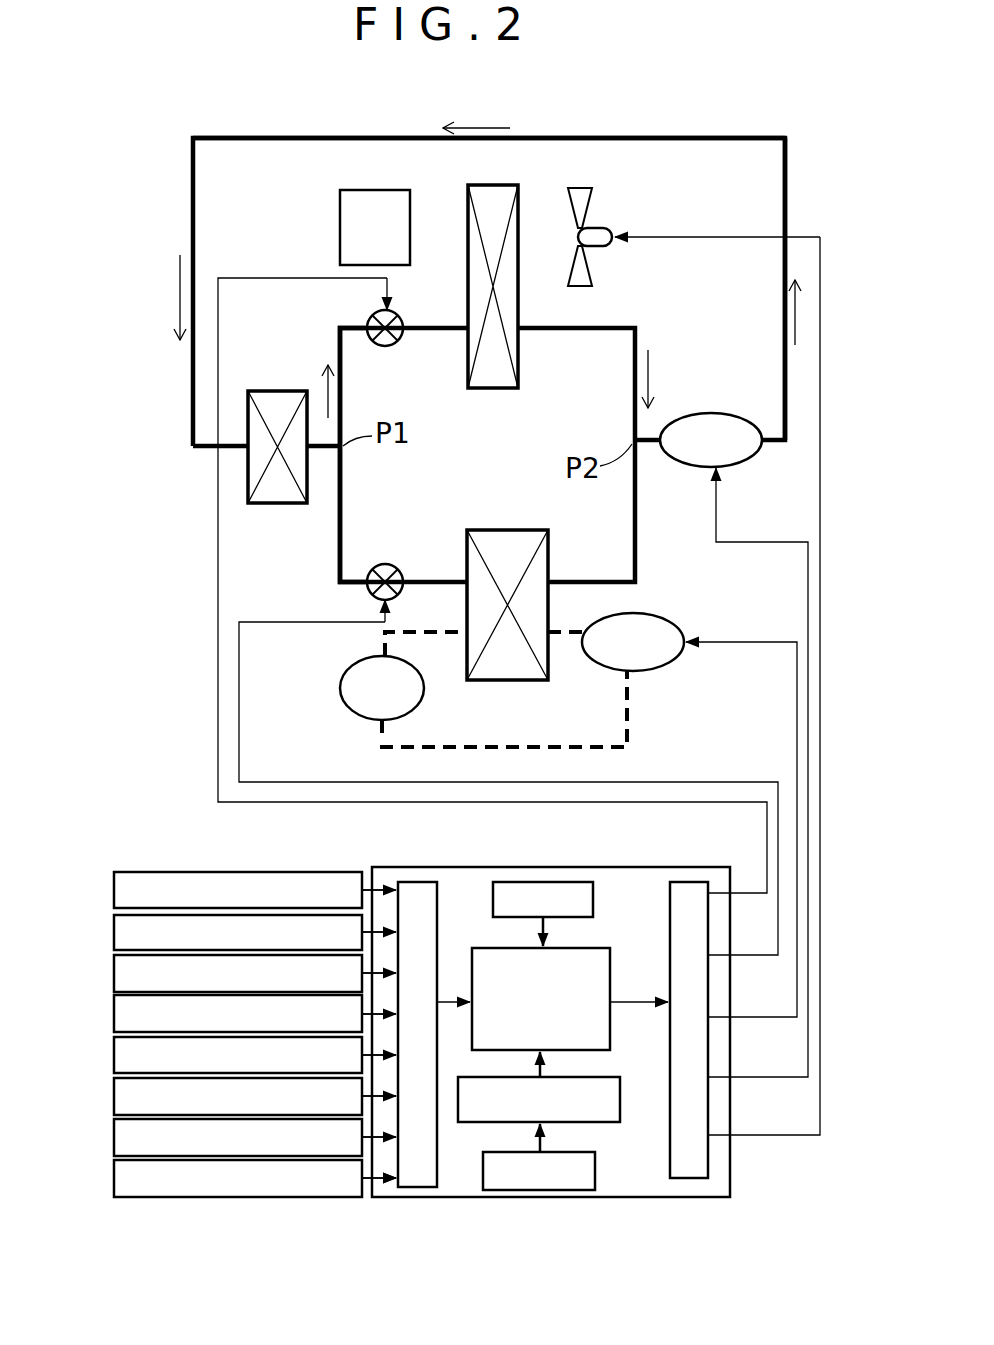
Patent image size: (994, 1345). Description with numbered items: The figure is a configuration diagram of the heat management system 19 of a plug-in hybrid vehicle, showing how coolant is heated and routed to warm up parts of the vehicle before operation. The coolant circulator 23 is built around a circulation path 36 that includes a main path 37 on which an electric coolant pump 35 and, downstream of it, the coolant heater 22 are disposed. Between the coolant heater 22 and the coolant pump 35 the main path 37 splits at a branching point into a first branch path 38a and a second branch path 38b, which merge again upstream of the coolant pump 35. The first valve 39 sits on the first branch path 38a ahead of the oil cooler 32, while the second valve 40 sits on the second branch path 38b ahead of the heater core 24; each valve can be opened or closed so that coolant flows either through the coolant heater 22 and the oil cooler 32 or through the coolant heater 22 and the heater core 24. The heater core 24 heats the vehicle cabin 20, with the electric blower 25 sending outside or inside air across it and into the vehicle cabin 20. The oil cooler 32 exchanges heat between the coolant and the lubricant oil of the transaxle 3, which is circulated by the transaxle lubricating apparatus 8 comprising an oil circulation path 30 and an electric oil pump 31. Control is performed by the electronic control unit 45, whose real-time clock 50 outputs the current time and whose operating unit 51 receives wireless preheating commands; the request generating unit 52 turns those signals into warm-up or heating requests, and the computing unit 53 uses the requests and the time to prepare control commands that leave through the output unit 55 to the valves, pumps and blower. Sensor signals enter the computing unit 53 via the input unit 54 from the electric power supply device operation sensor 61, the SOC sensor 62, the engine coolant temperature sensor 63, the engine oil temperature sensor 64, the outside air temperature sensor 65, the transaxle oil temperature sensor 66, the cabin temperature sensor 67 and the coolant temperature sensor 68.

The heat management system 19 is at (219, 110).
The vehicle cabin 20 is at (339, 228).
The coolant heater 22 is at (275, 391).
The coolant circulator 23 is at (646, 316).
The heater core 24 is at (494, 186).
The electric blower 25 is at (598, 232).
The transaxle 3 is at (340, 690).
The transaxle lubricating apparatus 8 is at (672, 680).
The oil circulation path 30 is at (632, 735).
The oil pump 31 is at (645, 620).
The oil cooler 32 is at (502, 530).
The coolant pump 35 is at (706, 413).
The circulation path 36 is at (712, 134).
The main path 37 is at (638, 137).
The first branch path 38a is at (338, 552).
The second branch path 38b is at (338, 346).
The first valve 39 is at (388, 563).
The second valve 40 is at (402, 316).
The electronic control unit 45 is at (374, 868).
The real-time clock 50 is at (492, 902).
The operating unit 51 is at (483, 1170).
The request generating unit 52 is at (622, 1098).
The computing unit 53 is at (597, 948).
The input unit 54 is at (418, 882).
The output unit 55 is at (690, 882).
The electric power supply device operation sensor 61 is at (113, 891).
The SOC sensor 62 is at (113, 932).
The engine coolant temperature sensor 63 is at (113, 973).
The engine oil temperature sensor 64 is at (113, 1014).
The outside air temperature sensor 65 is at (113, 1055).
The transaxle oil temperature sensor 66 is at (113, 1096).
The cabin temperature sensor 67 is at (113, 1137).
The coolant temperature sensor 68 is at (113, 1178).